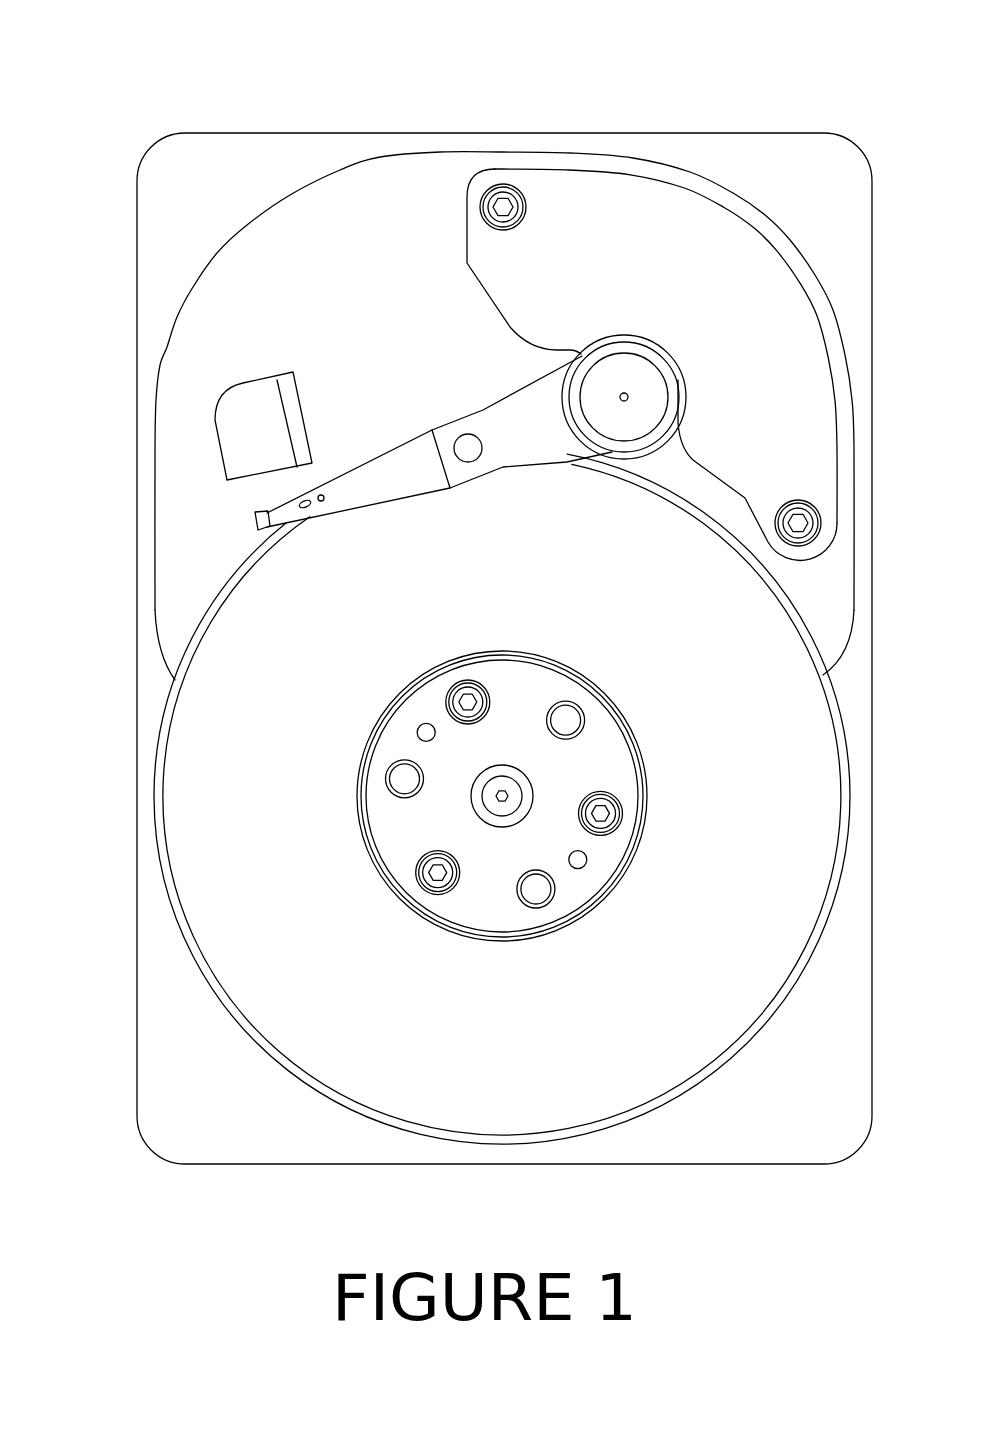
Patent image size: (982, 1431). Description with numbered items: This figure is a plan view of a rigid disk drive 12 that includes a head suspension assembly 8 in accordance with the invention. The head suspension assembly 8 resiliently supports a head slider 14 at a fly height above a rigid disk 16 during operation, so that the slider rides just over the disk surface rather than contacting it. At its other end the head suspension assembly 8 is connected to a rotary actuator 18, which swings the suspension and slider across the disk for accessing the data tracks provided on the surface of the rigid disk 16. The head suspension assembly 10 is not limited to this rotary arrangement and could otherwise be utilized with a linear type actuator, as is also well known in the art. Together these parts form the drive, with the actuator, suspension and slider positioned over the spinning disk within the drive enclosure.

The head suspension assembly 8 is at (492, 420).
The head suspension assembly 10 is at (360, 480).
The rigid disk drive 12 is at (683, 88).
The head slider 14 is at (253, 513).
The rigid disk 16 is at (658, 1027).
The rotary actuator 18 is at (630, 373).